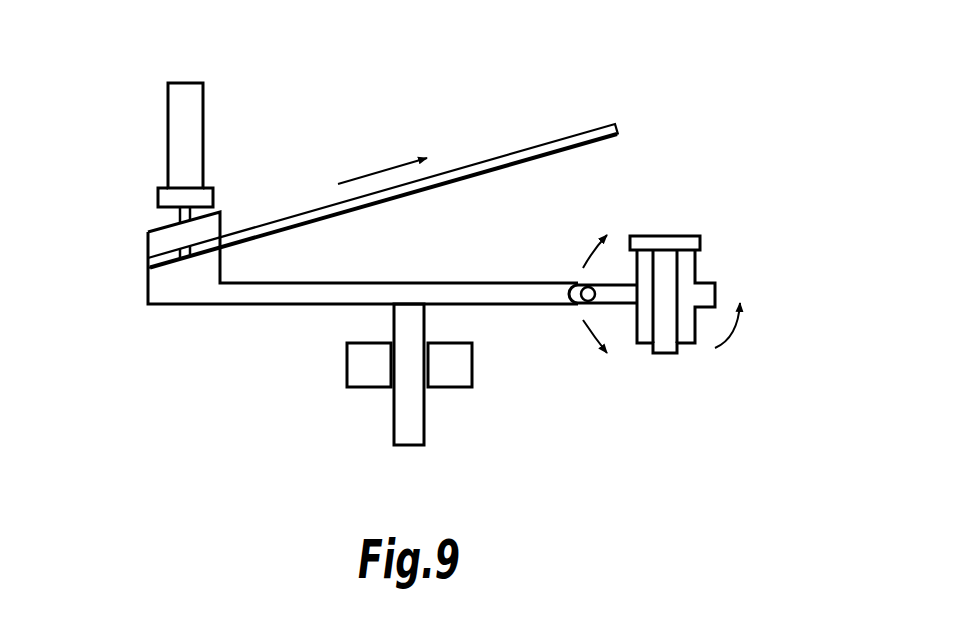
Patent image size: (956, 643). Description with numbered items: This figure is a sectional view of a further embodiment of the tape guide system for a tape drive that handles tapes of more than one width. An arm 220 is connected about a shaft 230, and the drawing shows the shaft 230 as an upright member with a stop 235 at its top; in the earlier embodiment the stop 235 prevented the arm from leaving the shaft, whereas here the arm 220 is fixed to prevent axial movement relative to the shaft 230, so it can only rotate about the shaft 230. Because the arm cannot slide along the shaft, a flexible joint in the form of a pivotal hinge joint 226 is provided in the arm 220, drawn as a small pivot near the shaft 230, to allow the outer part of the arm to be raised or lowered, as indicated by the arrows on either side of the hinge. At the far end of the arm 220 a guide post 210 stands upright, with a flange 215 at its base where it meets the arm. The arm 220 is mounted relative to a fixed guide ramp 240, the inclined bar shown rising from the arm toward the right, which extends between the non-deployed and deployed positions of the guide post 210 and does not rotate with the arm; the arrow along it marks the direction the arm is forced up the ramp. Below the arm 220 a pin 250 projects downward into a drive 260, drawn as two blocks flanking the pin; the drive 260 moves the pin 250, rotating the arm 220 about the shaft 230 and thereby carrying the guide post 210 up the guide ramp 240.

The guide post 210 is at (178, 112).
The actuator flange 215 is at (162, 198).
The arm 220 is at (512, 295).
The pivotal hinge joint 226 is at (567, 285).
The shaft 230 is at (667, 278).
The stop 235 is at (668, 240).
The guide ramp 240 is at (507, 158).
The pin 250 is at (403, 420).
The drive 260 is at (355, 363).